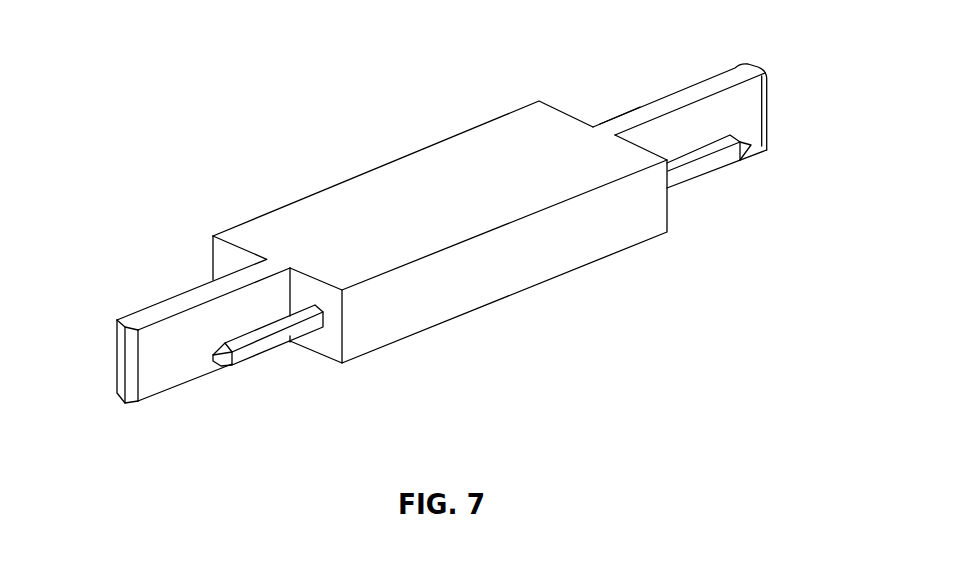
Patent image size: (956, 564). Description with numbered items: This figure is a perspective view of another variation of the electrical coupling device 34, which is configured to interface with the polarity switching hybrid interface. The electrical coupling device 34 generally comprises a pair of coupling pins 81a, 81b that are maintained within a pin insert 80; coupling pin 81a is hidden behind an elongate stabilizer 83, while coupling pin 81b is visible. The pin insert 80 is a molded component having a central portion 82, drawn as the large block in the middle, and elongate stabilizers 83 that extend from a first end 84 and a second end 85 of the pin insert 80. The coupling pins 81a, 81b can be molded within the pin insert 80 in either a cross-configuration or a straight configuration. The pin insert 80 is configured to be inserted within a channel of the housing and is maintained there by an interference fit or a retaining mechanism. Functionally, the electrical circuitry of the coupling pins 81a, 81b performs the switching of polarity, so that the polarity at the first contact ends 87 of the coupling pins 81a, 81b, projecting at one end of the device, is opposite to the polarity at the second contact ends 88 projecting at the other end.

The electrical coupling device 34 is at (263, 208).
The pin insert 80 is at (403, 185).
The central portion 82 is at (485, 278).
The elongate stabilizer 83 is at (177, 303).
The first end 84 is at (115, 355).
The second end 85 is at (750, 113).
The second contact ends 88 is at (767, 150).
The coupling pin 81a is at (640, 100).
The coupling pin 81b is at (695, 155).
The first contact ends 87 is at (218, 367).